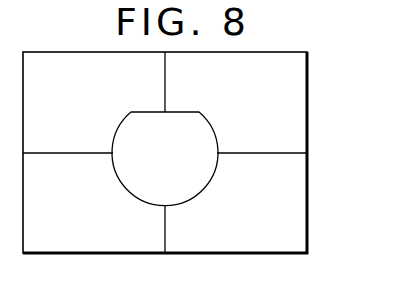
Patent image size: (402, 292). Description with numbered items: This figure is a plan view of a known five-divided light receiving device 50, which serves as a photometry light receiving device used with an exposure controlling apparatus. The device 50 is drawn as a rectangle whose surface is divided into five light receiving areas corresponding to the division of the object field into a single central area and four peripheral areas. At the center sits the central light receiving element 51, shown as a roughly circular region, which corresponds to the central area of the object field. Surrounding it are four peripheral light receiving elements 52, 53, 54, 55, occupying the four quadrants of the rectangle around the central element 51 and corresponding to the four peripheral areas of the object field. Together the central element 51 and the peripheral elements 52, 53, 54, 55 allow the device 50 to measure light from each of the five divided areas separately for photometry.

The five-divided light receiving device 50 is at (311, 115).
The central light receiving element 51 is at (165, 159).
The peripheral light receiving element 52 is at (250, 103).
The peripheral light receiving element 53 is at (249, 206).
The peripheral light receiving element 54 is at (82, 204).
The peripheral light receiving element 55 is at (83, 103).